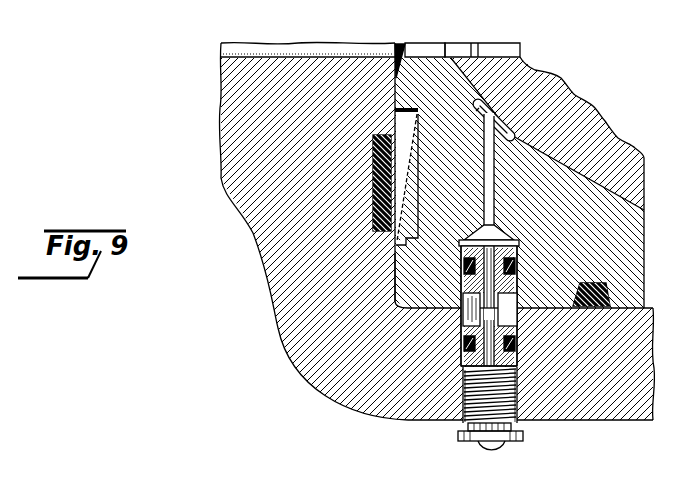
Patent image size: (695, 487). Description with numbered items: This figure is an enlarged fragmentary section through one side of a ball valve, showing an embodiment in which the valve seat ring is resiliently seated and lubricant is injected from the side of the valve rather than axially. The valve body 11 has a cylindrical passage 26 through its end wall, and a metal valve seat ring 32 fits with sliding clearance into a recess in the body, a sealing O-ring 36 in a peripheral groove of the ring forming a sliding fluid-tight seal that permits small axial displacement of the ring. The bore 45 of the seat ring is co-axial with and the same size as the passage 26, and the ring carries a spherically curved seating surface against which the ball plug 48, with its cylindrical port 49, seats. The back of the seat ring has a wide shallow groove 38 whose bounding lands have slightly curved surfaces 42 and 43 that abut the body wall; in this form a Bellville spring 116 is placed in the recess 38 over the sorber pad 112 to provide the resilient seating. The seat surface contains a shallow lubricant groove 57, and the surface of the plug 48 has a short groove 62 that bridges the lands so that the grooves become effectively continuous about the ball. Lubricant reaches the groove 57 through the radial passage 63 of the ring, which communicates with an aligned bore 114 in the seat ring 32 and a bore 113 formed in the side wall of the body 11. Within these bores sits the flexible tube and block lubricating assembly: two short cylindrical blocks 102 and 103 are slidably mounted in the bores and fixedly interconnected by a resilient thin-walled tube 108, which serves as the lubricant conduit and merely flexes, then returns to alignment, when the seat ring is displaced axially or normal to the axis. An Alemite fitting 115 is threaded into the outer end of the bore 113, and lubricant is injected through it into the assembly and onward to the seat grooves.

The body 11 is at (584, 414).
The cylindrical passage 26 is at (350, 48).
The valve seat ring 32 is at (630, 240).
The sealing O-ring 36 is at (603, 287).
The back surface groove 38 is at (409, 214).
The curved surface 42 is at (382, 65).
The curved surface 43 is at (387, 250).
The bore 45 is at (417, 49).
The ball plug 48 is at (517, 62).
The cylindrical port 49 is at (505, 48).
The lubricant groove 57 is at (469, 104).
The short groove 62 is at (489, 103).
The radial passage 63 is at (489, 165).
The cylindrical block 102 is at (509, 247).
The cylindrical block 103 is at (500, 337).
The flexible thin-walled tube 108 is at (473, 305).
The sorber pad 112 is at (363, 137).
The bore 113 is at (510, 359).
The bore 114 is at (457, 291).
The Alemite fitting 115 is at (498, 437).
The Bellville spring 116 is at (411, 184).